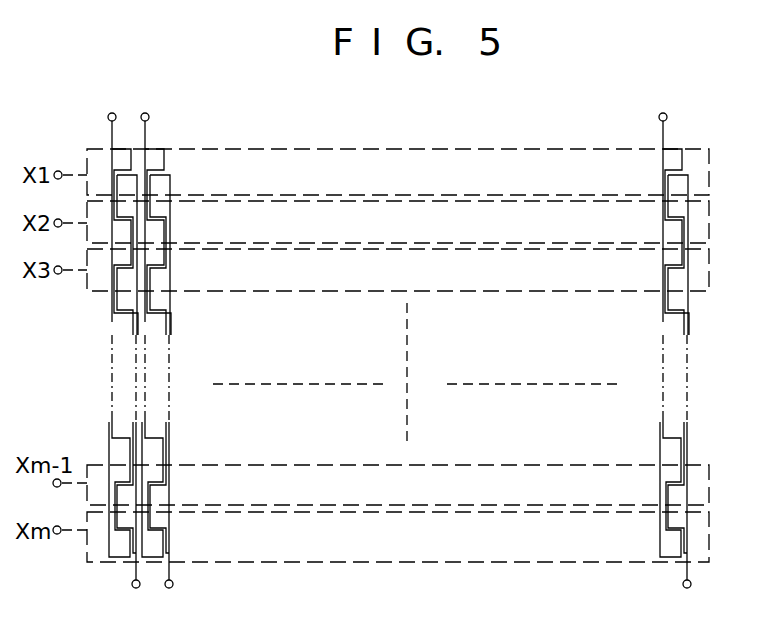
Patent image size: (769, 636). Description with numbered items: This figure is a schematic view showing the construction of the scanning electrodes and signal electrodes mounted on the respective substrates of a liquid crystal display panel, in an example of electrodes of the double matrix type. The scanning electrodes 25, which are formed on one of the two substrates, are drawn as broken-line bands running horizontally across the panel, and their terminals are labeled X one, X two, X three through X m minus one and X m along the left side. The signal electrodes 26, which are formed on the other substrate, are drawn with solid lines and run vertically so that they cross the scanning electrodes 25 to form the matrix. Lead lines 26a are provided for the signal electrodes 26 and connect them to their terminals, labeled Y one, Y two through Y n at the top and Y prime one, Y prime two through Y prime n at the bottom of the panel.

The scanning electrode 25 is at (309, 149).
The signal electrode 26 is at (677, 157).
The lead line 26a is at (112, 284).